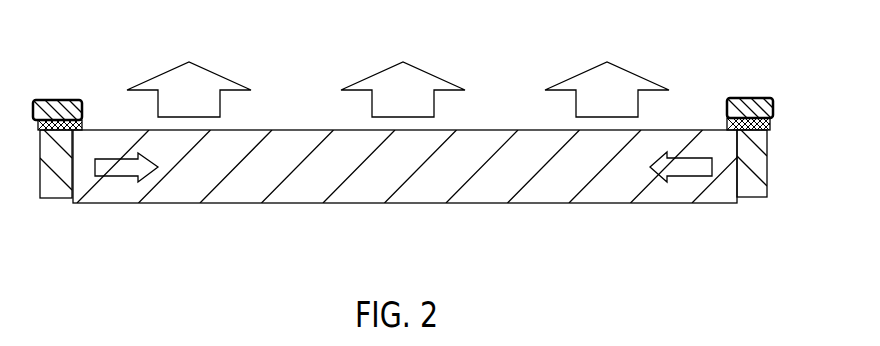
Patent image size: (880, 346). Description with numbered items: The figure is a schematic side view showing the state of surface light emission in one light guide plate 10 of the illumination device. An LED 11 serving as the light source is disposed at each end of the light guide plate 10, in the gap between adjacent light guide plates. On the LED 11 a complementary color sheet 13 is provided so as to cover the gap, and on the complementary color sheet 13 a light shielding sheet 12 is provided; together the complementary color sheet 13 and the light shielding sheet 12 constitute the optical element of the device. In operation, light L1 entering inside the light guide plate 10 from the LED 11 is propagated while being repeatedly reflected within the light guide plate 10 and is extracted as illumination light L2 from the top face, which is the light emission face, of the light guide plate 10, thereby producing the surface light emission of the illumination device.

The light guide plate 10 is at (465, 183).
The LED 11 is at (758, 197).
The light shielding sheet 12 is at (757, 98).
The complementary color sheet 13 is at (771, 125).
The light entering the light guide plate L1 is at (682, 171).
The illumination light L2 is at (623, 84).